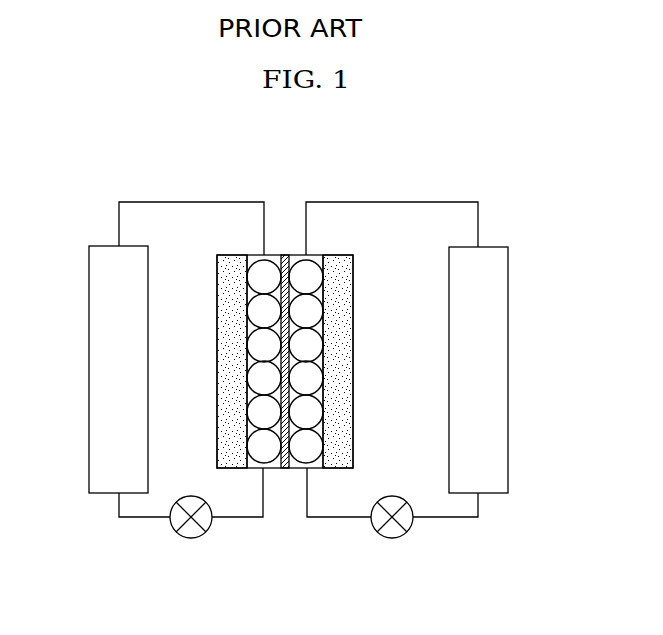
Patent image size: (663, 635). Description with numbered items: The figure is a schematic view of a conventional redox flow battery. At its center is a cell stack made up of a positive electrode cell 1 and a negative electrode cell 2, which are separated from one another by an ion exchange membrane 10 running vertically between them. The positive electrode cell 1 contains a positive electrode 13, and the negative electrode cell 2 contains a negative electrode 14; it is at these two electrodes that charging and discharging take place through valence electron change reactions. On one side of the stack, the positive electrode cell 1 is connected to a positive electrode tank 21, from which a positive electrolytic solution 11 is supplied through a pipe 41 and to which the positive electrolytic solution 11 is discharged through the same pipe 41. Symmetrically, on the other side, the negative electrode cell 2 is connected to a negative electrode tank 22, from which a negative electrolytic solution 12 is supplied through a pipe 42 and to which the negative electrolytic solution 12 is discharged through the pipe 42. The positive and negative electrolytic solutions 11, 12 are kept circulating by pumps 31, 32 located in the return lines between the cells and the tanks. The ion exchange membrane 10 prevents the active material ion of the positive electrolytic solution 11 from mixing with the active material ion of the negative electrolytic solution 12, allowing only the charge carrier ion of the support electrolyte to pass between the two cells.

The positive electrode cell 1 is at (216, 281).
The negative electrode cell 2 is at (355, 282).
The ion exchange membrane 10 is at (287, 254).
The positive electrolytic solution 11 is at (257, 468).
The negative electrolytic solution 12 is at (314, 468).
The positive electrode 13 is at (230, 428).
The negative electrode 14 is at (338, 430).
The positive electrode tank 21 is at (89, 295).
The negative electrode tank 22 is at (508, 295).
The pump 31 is at (191, 538).
The pump 32 is at (392, 538).
The pipe 41 is at (195, 202).
The pipe 42 is at (392, 202).